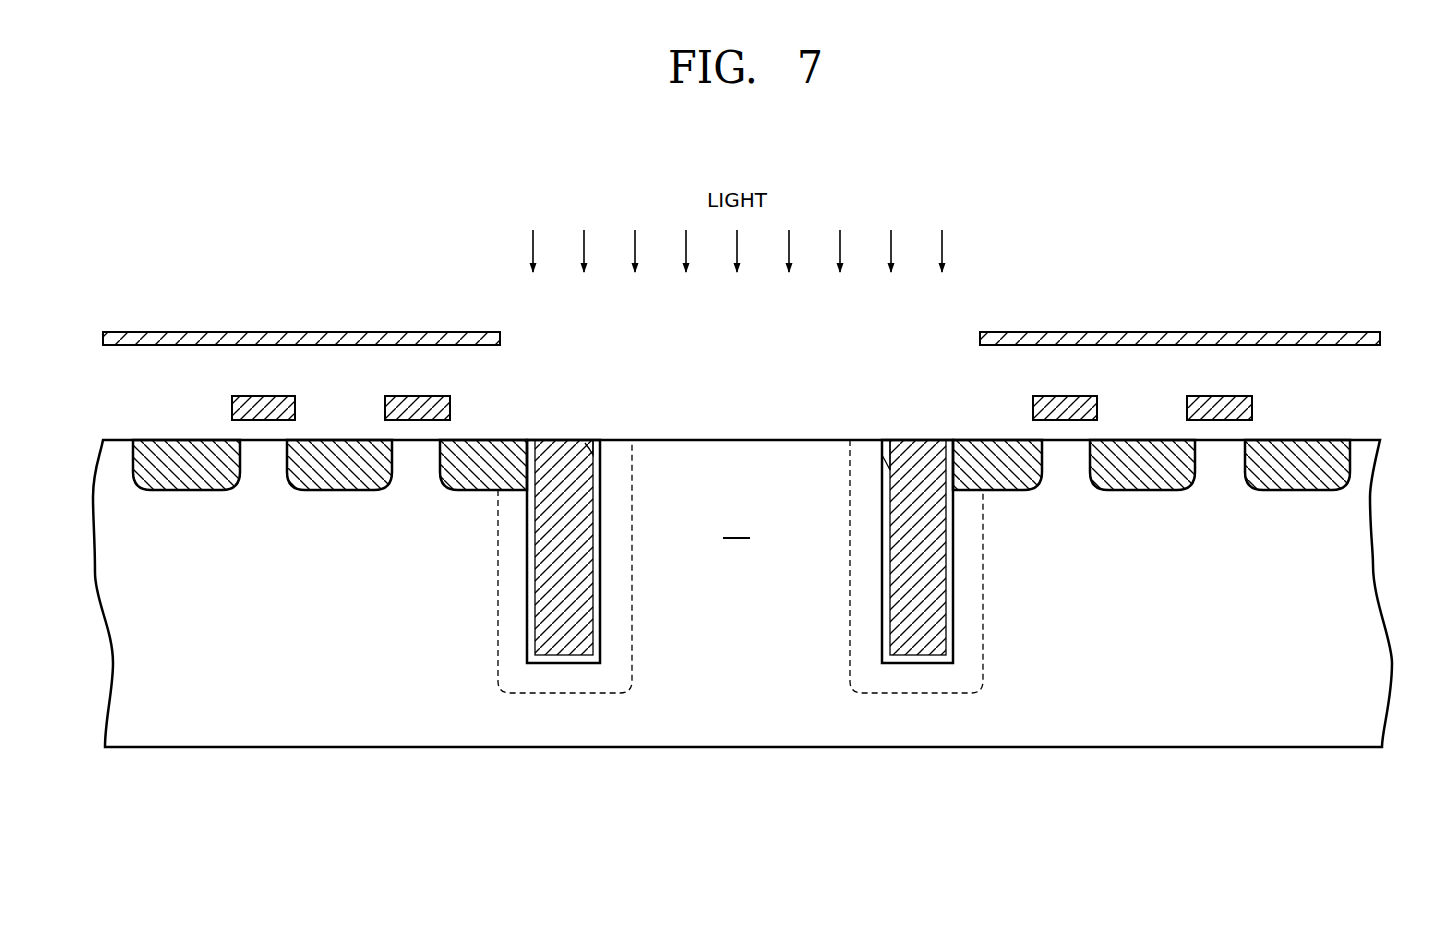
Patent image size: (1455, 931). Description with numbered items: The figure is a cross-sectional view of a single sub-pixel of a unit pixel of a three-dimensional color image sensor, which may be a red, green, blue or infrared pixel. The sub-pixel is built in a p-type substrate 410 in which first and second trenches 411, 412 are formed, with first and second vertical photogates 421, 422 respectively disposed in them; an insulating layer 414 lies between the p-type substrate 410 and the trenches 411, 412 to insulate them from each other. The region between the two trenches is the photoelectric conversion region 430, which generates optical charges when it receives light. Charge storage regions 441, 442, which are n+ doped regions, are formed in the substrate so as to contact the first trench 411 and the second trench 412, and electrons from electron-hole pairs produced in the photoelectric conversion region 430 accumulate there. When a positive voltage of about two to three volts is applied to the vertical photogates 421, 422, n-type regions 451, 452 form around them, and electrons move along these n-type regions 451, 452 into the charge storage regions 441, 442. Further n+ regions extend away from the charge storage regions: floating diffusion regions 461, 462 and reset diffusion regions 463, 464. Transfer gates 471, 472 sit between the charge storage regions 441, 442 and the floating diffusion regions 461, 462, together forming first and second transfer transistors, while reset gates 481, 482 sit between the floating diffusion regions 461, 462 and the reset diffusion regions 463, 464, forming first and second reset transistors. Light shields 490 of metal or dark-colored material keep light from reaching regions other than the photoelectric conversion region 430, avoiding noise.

The p-type substrate 410 is at (1375, 593).
The first trench 411 is at (587, 452).
The second trench 412 is at (885, 473).
The insulating layer 414 is at (527, 440).
The first vertical photogate 421 is at (565, 440).
The second vertical photogate 422 is at (917, 440).
The photoelectric conversion region 430 is at (728, 435).
The first charge storage region 441 is at (478, 447).
The second charge storage region 442 is at (1004, 447).
The first n-type region 451 is at (618, 458).
The second n-type region 452 is at (857, 467).
The first floating diffusion region 461 is at (342, 445).
The second floating diffusion region 462 is at (1155, 445).
The first reset diffusion region 463 is at (187, 445).
The second reset diffusion region 464 is at (1320, 445).
The first transfer gate 471 is at (355, 375).
The second transfer gate 472 is at (1063, 396).
The first reset gate 481 is at (200, 375).
The second reset gate 482 is at (1218, 396).
The light shield 490 is at (1180, 332).